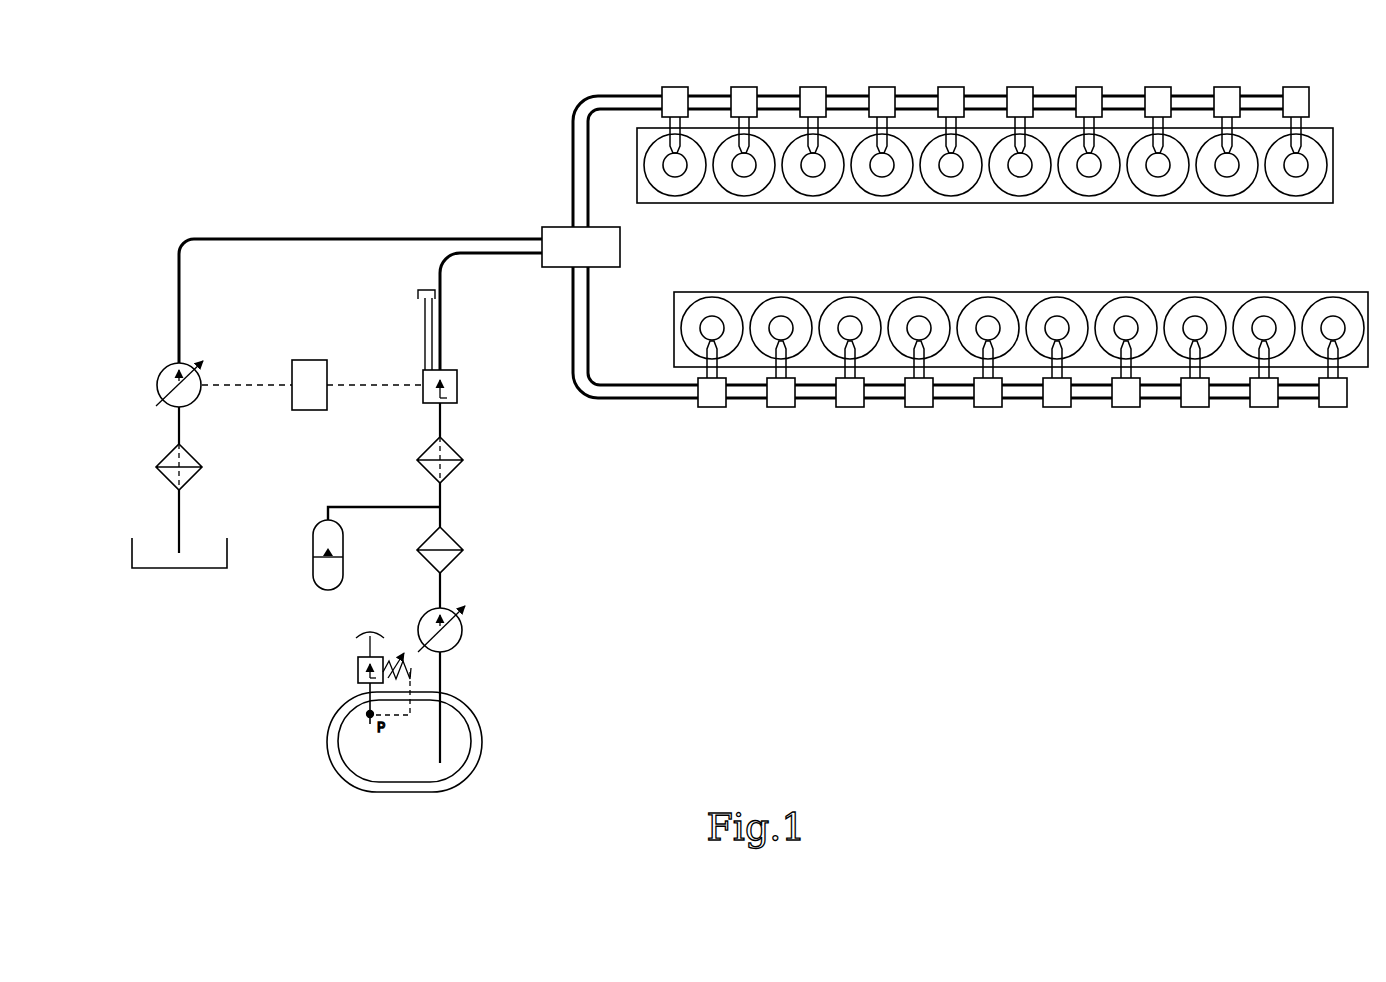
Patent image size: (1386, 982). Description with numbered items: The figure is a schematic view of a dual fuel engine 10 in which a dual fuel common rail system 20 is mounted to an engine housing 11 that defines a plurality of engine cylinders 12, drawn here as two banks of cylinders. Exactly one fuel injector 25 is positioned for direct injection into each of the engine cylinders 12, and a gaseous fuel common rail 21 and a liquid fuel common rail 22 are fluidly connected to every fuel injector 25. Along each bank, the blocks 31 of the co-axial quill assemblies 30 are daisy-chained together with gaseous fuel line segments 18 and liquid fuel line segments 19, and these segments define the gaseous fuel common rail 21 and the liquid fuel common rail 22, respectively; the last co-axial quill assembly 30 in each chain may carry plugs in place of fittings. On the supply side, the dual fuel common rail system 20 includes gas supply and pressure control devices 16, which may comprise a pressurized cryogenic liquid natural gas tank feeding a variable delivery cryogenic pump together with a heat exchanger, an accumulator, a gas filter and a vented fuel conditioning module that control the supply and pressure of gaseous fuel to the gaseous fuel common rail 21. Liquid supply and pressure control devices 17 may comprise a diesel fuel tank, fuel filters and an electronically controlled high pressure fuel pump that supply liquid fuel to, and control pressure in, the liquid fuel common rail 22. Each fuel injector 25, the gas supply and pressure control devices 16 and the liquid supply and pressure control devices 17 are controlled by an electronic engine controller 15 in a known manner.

The dual fuel engine 10 is at (972, 260).
The engine housing 11 is at (716, 204).
The engine cylinders 12 is at (810, 189).
The electronic engine controller 15 is at (311, 359).
The gas supply and pressure control devices 16 is at (306, 522).
The liquid supply and pressure control devices 17 is at (148, 362).
The gaseous fuel line segments 18 is at (1050, 119).
The liquid fuel line segments 19 is at (1121, 98).
The dual fuel common rail system 20 is at (791, 149).
The gaseous fuel common rail 21 is at (848, 99).
The liquid fuel common rail 22 is at (1048, 102).
The fuel injector 25 is at (894, 176).
The co-axial quill assemblies 30 is at (881, 84).
The blocks 31 is at (813, 86).